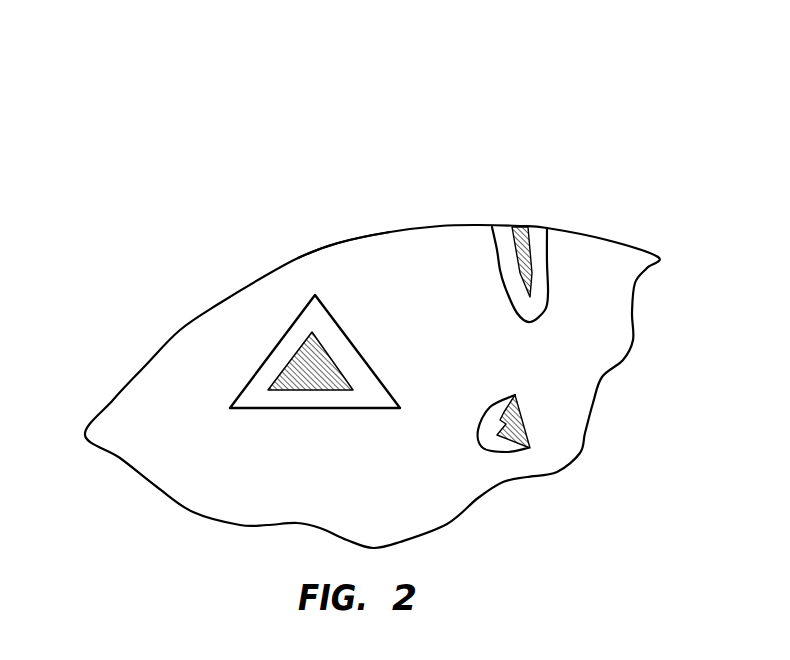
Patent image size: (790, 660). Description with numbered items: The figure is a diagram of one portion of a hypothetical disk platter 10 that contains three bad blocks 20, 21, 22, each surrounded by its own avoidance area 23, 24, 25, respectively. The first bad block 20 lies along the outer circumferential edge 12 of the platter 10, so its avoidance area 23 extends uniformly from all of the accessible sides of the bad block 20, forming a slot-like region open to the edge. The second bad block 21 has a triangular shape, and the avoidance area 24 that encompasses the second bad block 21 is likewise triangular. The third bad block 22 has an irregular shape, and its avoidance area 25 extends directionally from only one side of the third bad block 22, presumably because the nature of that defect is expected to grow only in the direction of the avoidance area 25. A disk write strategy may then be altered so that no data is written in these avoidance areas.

The platter 10 is at (215, 138).
The outer circumferential edge 12 is at (337, 243).
The bad block 20 is at (517, 225).
The second bad block 21 is at (302, 368).
The third bad block 22 is at (525, 427).
The avoidance area 23 is at (547, 267).
The avoidance area 24 is at (258, 367).
The avoidance area 25 is at (500, 452).